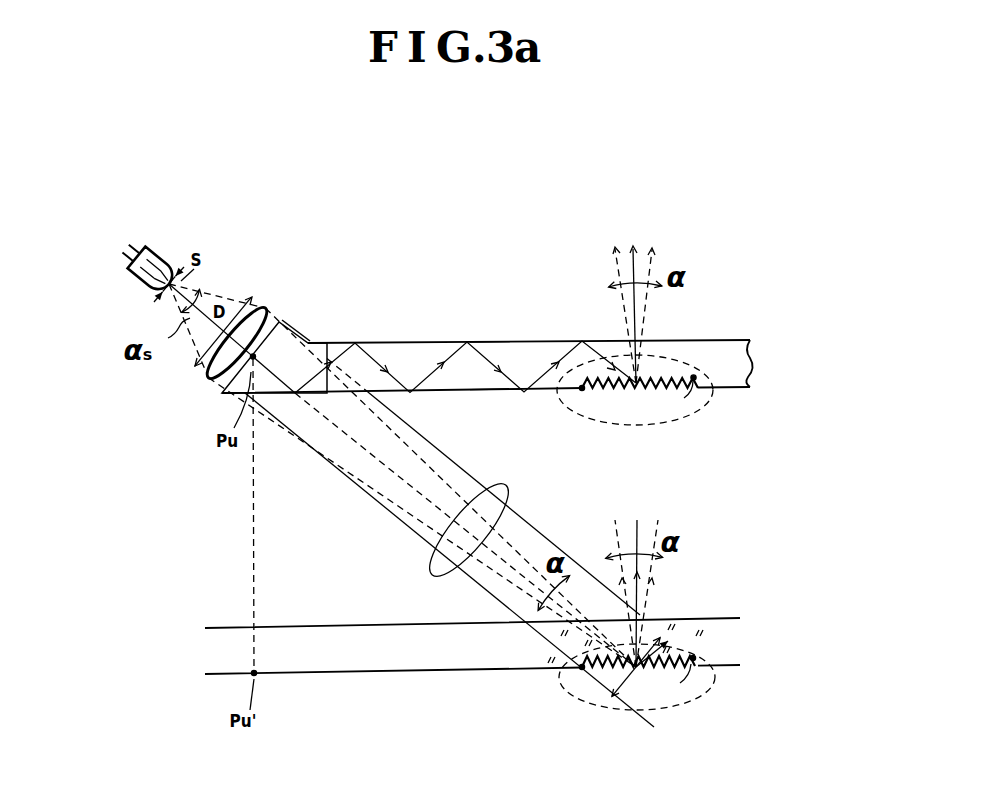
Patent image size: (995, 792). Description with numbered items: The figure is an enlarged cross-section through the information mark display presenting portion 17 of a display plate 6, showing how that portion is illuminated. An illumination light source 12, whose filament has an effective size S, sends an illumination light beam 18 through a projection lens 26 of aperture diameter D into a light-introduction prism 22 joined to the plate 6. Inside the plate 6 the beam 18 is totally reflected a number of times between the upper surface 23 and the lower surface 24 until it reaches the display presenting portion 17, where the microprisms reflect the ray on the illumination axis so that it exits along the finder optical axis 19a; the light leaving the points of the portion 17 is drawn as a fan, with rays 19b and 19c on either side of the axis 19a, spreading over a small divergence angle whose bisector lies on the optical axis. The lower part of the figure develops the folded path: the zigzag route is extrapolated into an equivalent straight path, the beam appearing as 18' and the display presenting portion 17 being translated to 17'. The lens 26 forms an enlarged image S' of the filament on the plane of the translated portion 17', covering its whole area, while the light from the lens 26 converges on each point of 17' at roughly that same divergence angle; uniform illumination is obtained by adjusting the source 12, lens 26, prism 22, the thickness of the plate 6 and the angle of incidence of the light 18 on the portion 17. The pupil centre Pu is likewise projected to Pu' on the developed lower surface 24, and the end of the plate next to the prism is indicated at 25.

The illumination light source 12 is at (158, 256).
The projection lens 26 is at (264, 306).
The light-introduction prism 22 is at (300, 328).
The illumination light beam 18 is at (465, 333).
The upper surface of the display plate 23 is at (492, 338).
The lower surface of the display plate 24 is at (495, 391).
The display plate 6 is at (727, 338).
The finder optical axis 19a is at (634, 244).
The diffracted light beam 19b is at (612, 258).
The diffracted light beam 19c is at (655, 256).
The information mark display presenting portion 17 is at (647, 402).
The end face of light guide plate 25 is at (219, 393).
The unfolded image of light beam 18' is at (451, 538).
The translated display presenting portion 17' is at (640, 693).